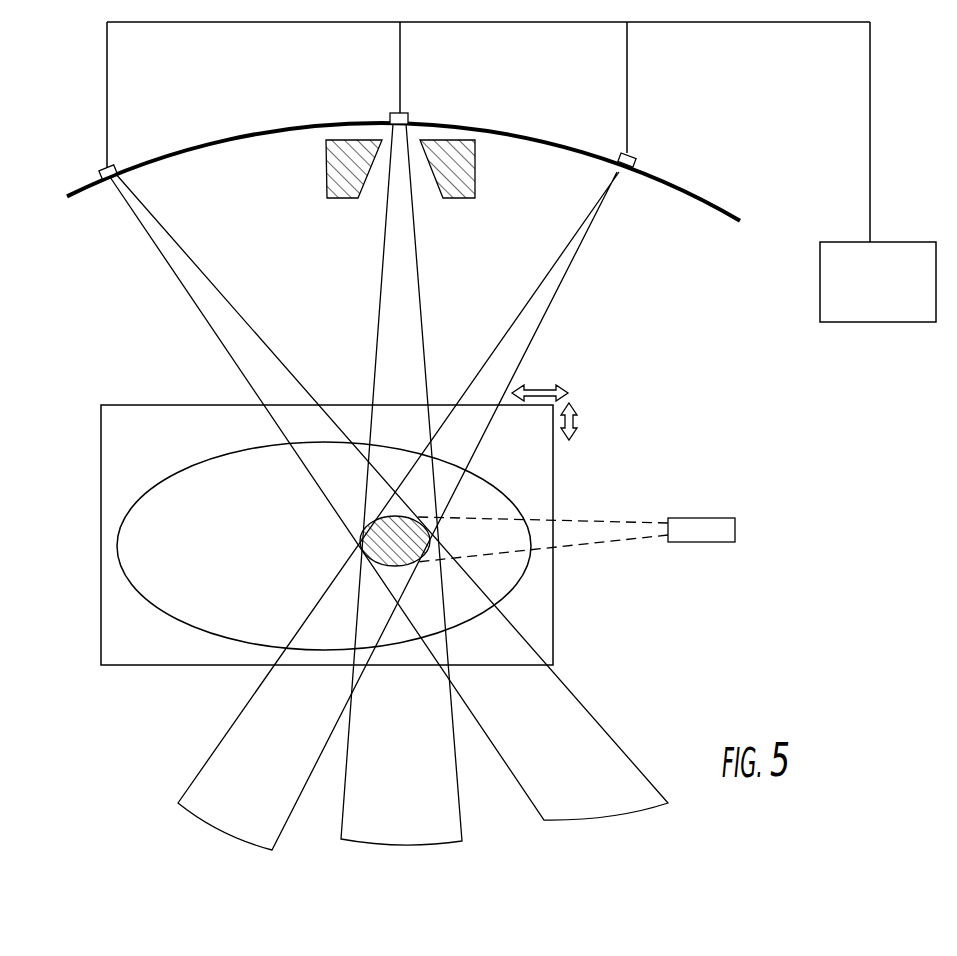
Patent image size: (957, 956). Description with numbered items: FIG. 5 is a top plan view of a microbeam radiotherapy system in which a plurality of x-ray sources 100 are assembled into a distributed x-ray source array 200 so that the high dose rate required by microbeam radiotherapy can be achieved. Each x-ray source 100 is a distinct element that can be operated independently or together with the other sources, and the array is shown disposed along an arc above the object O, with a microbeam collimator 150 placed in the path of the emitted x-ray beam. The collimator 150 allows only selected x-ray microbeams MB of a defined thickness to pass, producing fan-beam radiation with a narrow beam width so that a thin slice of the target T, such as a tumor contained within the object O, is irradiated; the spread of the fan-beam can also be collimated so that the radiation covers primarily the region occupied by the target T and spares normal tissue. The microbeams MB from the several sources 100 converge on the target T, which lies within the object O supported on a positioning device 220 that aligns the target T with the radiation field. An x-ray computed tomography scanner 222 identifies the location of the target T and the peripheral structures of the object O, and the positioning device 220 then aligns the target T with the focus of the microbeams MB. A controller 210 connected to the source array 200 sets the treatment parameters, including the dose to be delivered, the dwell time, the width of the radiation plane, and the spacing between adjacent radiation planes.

The x-ray source 100 is at (106, 170).
The microbeam collimator 150 is at (458, 132).
The distributed x-ray source array 200 is at (732, 124).
The controller 210 is at (896, 298).
The positioning device 220 is at (553, 483).
The x-ray computed tomography (CT) scanner 222 is at (735, 530).
The x-ray microbeams MB is at (592, 260).
The object O is at (127, 514).
The target T is at (362, 536).